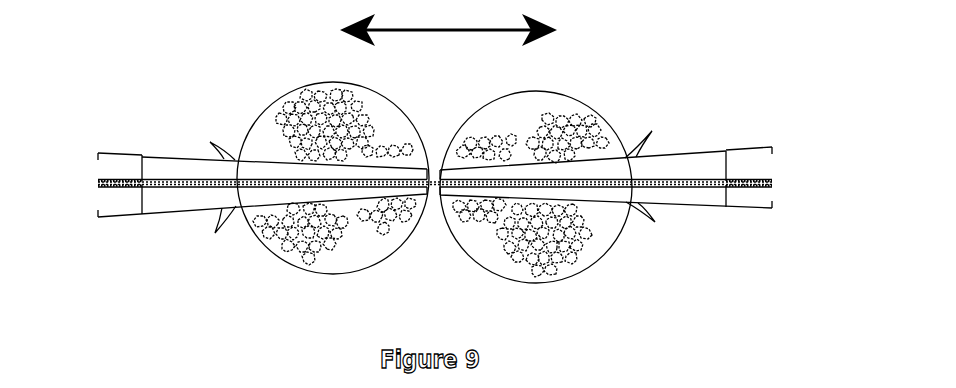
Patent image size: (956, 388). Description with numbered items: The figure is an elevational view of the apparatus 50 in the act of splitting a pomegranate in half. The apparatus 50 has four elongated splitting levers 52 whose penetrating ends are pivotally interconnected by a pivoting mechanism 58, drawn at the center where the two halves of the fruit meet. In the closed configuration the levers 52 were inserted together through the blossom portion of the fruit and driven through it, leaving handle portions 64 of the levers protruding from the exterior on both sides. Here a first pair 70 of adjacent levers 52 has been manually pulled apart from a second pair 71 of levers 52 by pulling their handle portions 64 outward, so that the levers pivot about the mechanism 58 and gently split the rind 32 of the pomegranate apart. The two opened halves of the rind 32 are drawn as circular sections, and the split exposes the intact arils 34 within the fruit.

The rind 32 is at (303, 269).
The arils 34 is at (289, 108).
The apparatus 50 is at (435, 125).
The splitting lever 52 is at (167, 156).
The pivoting mechanism 58 is at (440, 200).
The handle portion 64 is at (98, 178).
The first pair of levers 70 is at (190, 241).
The second pair of levers 71 is at (682, 252).